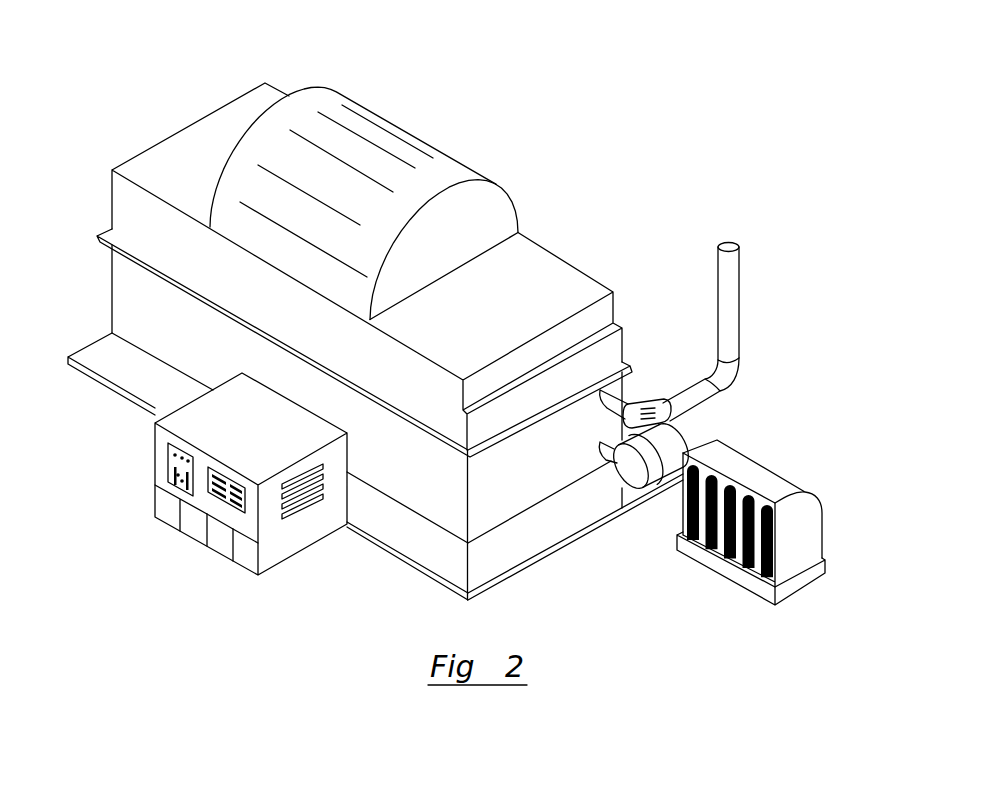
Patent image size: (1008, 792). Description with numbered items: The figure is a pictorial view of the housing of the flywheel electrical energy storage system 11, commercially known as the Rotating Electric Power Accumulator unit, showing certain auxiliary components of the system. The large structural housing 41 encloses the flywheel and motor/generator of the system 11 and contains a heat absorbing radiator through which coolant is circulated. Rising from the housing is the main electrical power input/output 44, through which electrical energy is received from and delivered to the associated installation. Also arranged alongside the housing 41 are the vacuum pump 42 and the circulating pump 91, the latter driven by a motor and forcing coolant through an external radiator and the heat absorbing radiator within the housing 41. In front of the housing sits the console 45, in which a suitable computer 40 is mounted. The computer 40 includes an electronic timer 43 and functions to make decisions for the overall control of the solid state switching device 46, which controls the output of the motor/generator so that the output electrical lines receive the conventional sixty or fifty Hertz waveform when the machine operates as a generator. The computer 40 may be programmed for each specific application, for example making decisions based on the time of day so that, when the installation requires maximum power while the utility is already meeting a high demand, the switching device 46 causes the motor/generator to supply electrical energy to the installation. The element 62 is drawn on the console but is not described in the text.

The electrical energy storage system 11 is at (176, 134).
The structural housing 41 is at (393, 125).
The main electrical power input/output 44 is at (742, 250).
The vacuum pump 42 is at (630, 468).
The circulating pump 91 is at (797, 598).
The computer 40 is at (167, 505).
The console 45 is at (192, 430).
The electronic timer 43 is at (195, 528).
The connector compartment 62 is at (217, 545).
The solid state switching device 46 is at (242, 557).